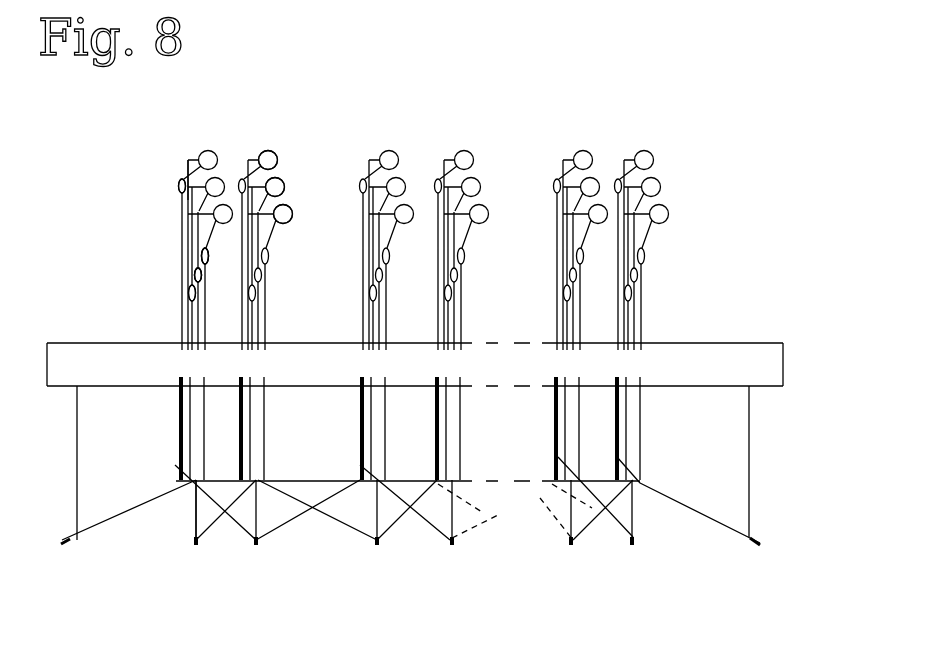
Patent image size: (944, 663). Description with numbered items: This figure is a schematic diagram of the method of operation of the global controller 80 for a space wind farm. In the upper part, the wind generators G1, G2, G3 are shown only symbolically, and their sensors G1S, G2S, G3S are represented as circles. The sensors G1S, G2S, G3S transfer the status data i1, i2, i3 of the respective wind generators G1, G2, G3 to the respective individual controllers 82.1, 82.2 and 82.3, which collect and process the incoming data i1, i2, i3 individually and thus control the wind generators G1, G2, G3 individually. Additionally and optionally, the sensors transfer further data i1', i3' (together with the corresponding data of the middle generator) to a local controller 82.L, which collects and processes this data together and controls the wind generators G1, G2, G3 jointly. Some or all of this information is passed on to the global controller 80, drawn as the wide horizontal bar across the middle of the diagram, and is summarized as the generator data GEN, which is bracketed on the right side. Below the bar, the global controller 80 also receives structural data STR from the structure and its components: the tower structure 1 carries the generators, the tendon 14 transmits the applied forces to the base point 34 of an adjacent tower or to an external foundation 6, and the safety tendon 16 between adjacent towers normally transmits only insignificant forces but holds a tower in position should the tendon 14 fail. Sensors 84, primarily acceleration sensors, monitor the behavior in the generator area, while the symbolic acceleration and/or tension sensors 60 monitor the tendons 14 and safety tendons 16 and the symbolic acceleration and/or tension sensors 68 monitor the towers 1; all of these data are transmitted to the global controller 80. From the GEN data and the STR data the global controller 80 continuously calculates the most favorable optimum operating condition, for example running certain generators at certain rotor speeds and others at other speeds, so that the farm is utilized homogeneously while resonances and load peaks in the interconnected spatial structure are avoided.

The global controller 80 is at (140, 357).
The local controller 82.L is at (190, 188).
The individual controller 82.1 is at (196, 247).
The individual controller 82.2 is at (187, 282).
The individual controller 82.3 is at (187, 302).
The wind generator G1 is at (293, 214).
The wind generator G2 is at (285, 187).
The wind generator G3 is at (278, 160).
The sensor G1S is at (238, 185).
The sensor G2S is at (228, 190).
The sensor G3S is at (201, 166).
The status data i1 is at (220, 243).
The data i1' is at (224, 227).
The status data i2 is at (183, 213).
The status data i3 is at (163, 167).
The data i3' is at (160, 152).
The sensors 84 is at (193, 522).
The acceleration and/or tension sensors of towers 68 is at (257, 512).
The acceleration and/or tension sensors of tendons 60 is at (378, 482).
The safety tendon 16 is at (309, 483).
The tendon 14 is at (107, 521).
The tower structure 1 is at (379, 508).
The external foundation 6 is at (64, 543).
The base point 34 is at (196, 543).
The generator data GEN is at (815, 158).
The structural data STR is at (815, 393).